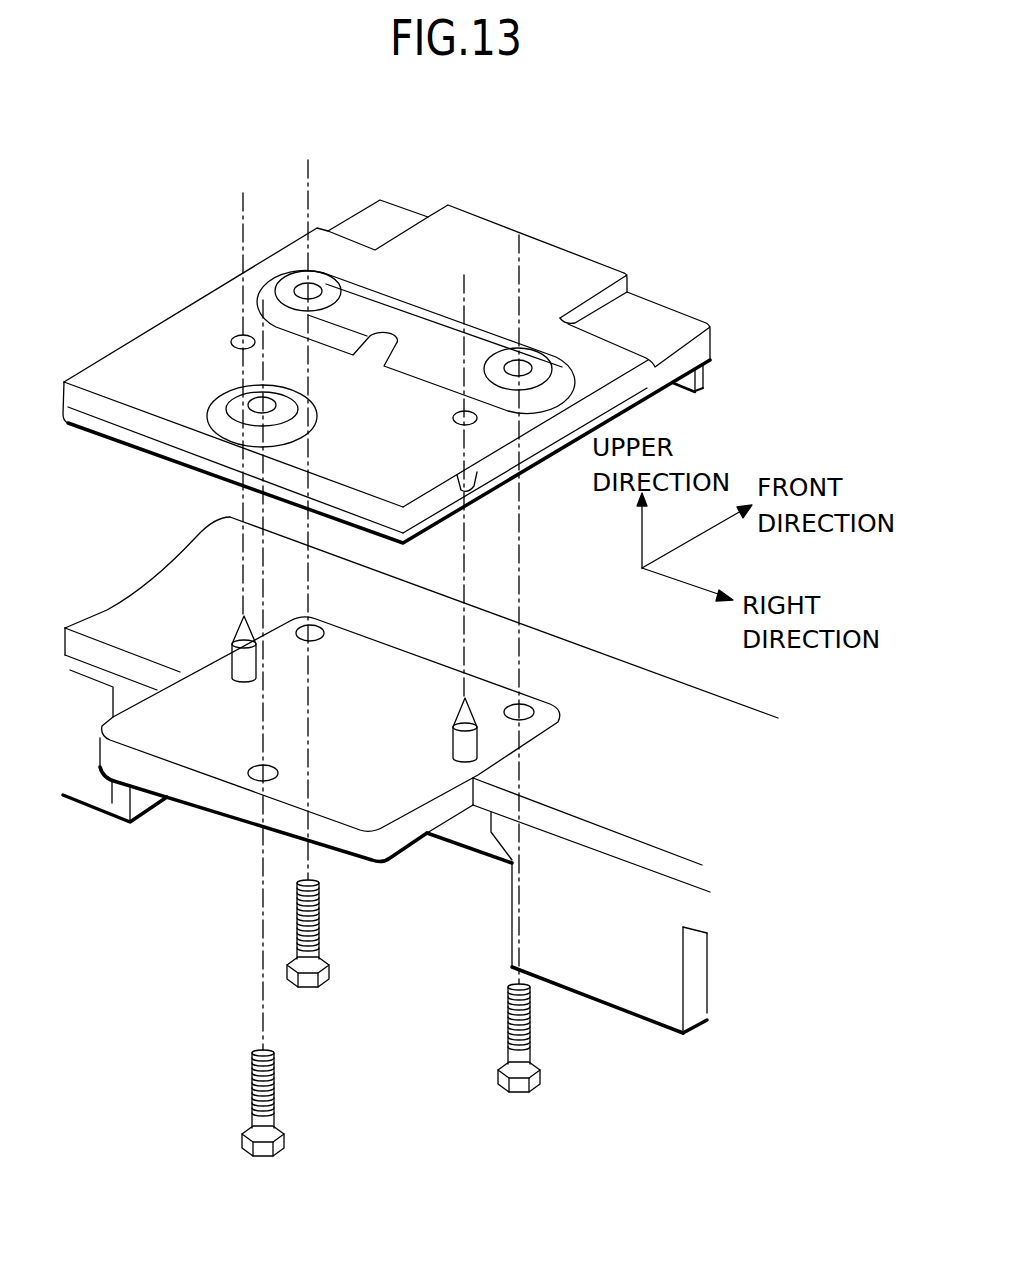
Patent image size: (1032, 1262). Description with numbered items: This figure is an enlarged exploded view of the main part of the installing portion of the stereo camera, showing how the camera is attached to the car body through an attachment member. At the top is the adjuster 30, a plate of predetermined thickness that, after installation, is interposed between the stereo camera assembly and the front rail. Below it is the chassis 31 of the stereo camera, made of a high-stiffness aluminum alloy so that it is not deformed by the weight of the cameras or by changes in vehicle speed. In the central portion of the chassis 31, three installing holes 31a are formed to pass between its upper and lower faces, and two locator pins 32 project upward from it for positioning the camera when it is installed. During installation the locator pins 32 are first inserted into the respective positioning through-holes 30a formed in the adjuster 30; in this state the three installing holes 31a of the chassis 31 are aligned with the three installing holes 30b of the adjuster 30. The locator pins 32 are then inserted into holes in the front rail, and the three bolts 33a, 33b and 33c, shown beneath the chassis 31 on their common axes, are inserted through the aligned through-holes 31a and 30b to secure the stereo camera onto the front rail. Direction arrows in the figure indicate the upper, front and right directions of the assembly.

The adjuster 30 is at (537, 252).
The positioning through-hole 30a is at (232, 337).
The installing hole 30b is at (318, 292).
The chassis 31 is at (668, 783).
The installing hole 31a is at (316, 638).
The locator pin 32 is at (243, 668).
The bolt 33a is at (281, 1140).
The bolt 33b is at (327, 973).
The bolt 33c is at (545, 1078).